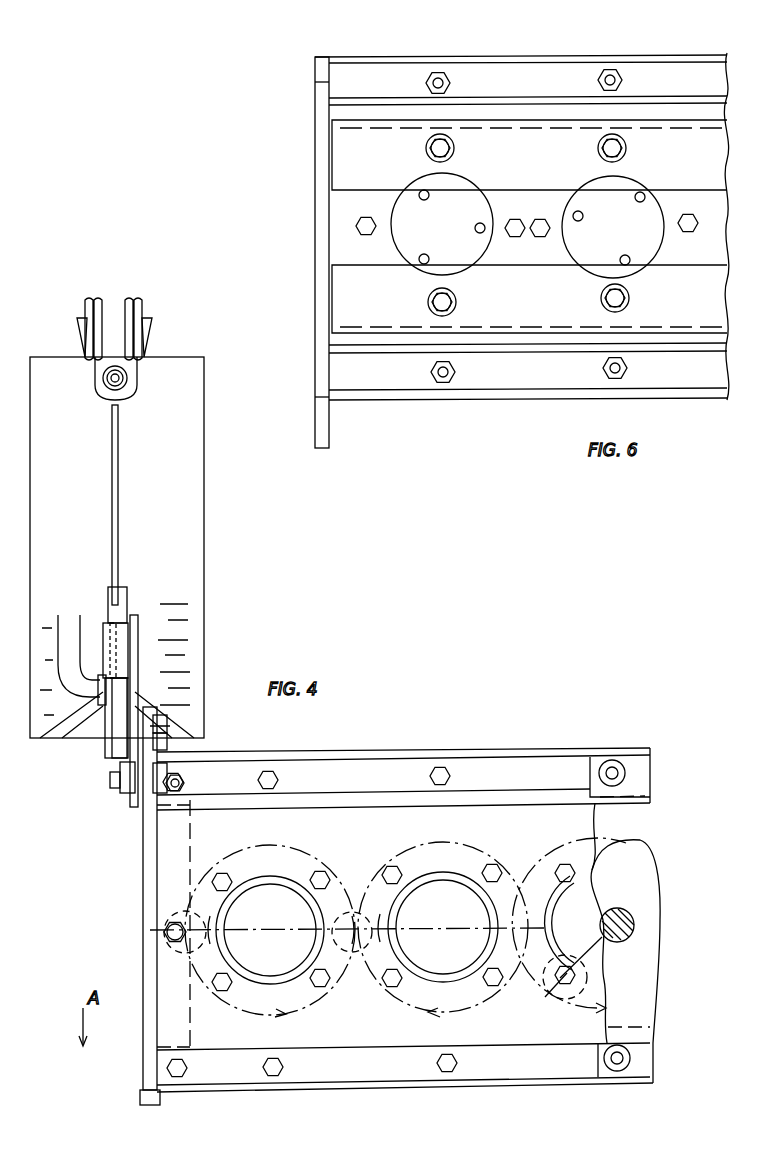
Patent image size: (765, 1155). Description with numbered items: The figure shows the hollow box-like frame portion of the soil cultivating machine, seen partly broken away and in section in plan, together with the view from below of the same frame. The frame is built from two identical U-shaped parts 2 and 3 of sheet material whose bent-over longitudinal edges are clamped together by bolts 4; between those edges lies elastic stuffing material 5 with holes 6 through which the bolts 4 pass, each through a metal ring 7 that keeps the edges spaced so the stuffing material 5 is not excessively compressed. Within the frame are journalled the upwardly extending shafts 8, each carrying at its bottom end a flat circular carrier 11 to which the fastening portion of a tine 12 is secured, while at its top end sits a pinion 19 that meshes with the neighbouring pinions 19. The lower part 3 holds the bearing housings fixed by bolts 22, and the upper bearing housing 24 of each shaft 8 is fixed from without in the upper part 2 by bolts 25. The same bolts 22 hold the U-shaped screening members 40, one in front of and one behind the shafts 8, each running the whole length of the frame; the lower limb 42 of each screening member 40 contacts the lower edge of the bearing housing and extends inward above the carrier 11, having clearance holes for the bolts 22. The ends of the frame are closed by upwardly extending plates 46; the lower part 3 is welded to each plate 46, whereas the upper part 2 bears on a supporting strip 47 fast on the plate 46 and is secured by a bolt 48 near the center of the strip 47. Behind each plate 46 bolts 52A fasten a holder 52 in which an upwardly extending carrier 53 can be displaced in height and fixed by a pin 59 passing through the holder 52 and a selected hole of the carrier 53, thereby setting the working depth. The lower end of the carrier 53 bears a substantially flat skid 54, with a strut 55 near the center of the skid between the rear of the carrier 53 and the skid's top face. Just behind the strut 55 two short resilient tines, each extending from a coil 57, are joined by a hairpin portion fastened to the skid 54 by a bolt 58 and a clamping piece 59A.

In FIG. 4, the upper U-shaped part 2 is at (395, 1050).
In FIG. 6, the lower U-shaped part 3 is at (332, 248).
In FIG. 6, the bolt 4 is at (451, 84).
In FIG. 4, the bolt 4 is at (446, 770).
In FIG. 6, the elastic stuffing material 5 is at (668, 56).
In FIG. 4, the elastic stuffing material 5 is at (522, 752).
In FIG. 4, the hole 6 is at (612, 772).
In FIG. 4, the metal ring 7 is at (622, 775).
In FIG. 4, the upwardly extending shaft 8 is at (620, 904).
In FIG. 6, the circular carrier part 11 is at (426, 272).
In FIG. 4, the tine 12 is at (188, 921).
In FIG. 4, the pinion 19 is at (556, 880).
In FIG. 6, the bolt 22 is at (452, 149).
In FIG. 4, the bearing housing 24 is at (287, 905).
In FIG. 4, the bolt 25 is at (324, 985).
In FIG. 6, the screening member 40 is at (390, 119).
In FIG. 6, the lower limb 42 is at (690, 192).
In FIG. 6, the upwardly extending plate 46 is at (315, 146).
In FIG. 4, the upwardly extending plate 46 is at (143, 884).
In FIG. 4, the supporting strip 47 is at (192, 836).
In FIG. 4, the bolt 48 is at (165, 933).
In FIG. 4, the holder 52 is at (102, 748).
In FIG. 4, the bolt 52A is at (185, 770).
In FIG. 4, the carrier 53 is at (126, 596).
In FIG. 4, the skid 54 is at (205, 530).
In FIG. 4, the strut 55 is at (119, 470).
In FIG. 4, the coil 57 is at (96, 300).
In FIG. 4, the bolt 58 is at (103, 378).
In FIG. 4, the pin 59 is at (68, 614).
In FIG. 4, the clamping piece 59A is at (130, 380).